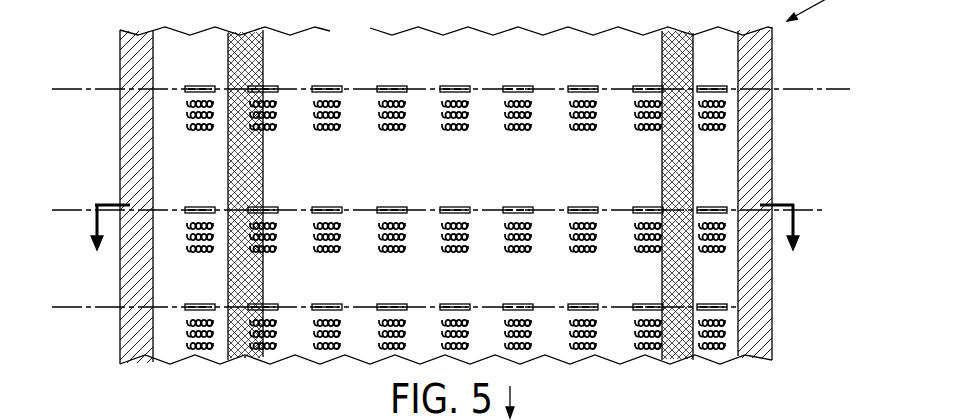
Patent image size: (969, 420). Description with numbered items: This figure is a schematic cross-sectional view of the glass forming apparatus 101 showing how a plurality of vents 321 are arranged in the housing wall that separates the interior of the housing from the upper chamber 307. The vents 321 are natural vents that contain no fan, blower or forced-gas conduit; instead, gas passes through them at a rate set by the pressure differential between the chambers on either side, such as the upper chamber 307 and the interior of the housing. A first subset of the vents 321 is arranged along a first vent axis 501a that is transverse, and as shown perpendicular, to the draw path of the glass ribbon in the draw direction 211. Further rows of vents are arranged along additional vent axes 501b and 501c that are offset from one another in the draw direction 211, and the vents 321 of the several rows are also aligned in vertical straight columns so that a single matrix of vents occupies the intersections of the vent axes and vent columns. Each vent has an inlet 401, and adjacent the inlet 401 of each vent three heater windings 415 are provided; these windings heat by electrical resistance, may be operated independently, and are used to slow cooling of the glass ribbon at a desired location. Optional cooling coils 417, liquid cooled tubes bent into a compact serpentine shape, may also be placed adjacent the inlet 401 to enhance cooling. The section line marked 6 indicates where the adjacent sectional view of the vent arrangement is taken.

The first vent axis 501a is at (71, 89).
The additional vent axis 501b is at (71, 210).
The additional vent axis 501c is at (63, 307).
The vents 321 is at (447, 75).
The inlet 401 is at (462, 86).
The heater windings 415 is at (368, 98).
The upper chamber 307 is at (772, 137).
The draw direction 211 is at (511, 395).
The section line 6- 6 is at (445, 248).
The cooling coils 417 is at (584, 416).
The glass forming apparatus 101 is at (847, 414).